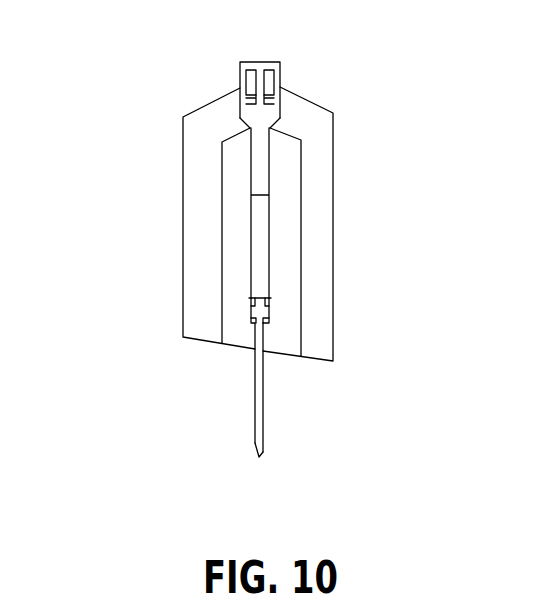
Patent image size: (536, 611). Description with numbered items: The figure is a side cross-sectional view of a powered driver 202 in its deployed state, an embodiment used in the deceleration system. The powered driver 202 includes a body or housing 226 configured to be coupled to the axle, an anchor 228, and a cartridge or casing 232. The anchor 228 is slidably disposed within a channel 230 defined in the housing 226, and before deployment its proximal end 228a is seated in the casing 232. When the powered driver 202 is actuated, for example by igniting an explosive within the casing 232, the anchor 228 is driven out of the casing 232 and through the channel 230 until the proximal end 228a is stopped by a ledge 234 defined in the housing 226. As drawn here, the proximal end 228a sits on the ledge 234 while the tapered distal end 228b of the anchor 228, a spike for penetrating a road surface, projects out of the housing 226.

The powered driver 202 is at (134, 65).
The housing 226 is at (333, 114).
The casing 232 is at (260, 160).
The channel 230 is at (250, 253).
The proximal end 228a is at (252, 298).
The ledge 234 is at (264, 334).
The anchor 228 is at (274, 398).
The distal end 228b is at (263, 440).